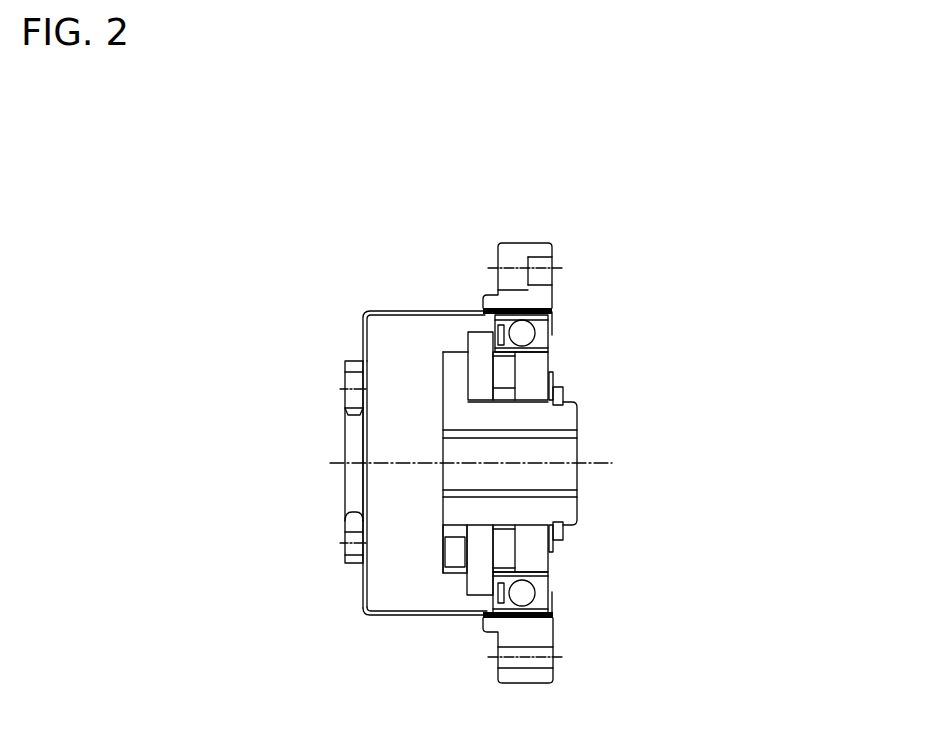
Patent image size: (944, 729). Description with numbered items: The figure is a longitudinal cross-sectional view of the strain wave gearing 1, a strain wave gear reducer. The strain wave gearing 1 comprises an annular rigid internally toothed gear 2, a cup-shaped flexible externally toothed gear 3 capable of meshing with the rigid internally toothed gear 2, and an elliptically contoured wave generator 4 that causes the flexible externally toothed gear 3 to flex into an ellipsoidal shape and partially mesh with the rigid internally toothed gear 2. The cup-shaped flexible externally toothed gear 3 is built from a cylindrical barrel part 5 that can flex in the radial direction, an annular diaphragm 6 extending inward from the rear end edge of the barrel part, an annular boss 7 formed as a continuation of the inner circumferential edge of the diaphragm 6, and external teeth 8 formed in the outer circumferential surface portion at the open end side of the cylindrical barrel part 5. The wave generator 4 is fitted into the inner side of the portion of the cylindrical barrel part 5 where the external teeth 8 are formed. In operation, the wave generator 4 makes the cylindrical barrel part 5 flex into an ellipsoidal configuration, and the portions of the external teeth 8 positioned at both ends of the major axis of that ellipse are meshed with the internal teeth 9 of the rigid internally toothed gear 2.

The strain wave gearing 1 is at (613, 219).
The rigid internally toothed gear 2 is at (554, 300).
The flexible externally toothed gear 3 is at (418, 298).
The wave generator 4 is at (556, 363).
The cylindrical barrel part 5 is at (416, 616).
The diaphragm 6 is at (363, 598).
The boss 7 is at (357, 523).
The external teeth 8 is at (533, 618).
The internal teeth 9 is at (525, 614).